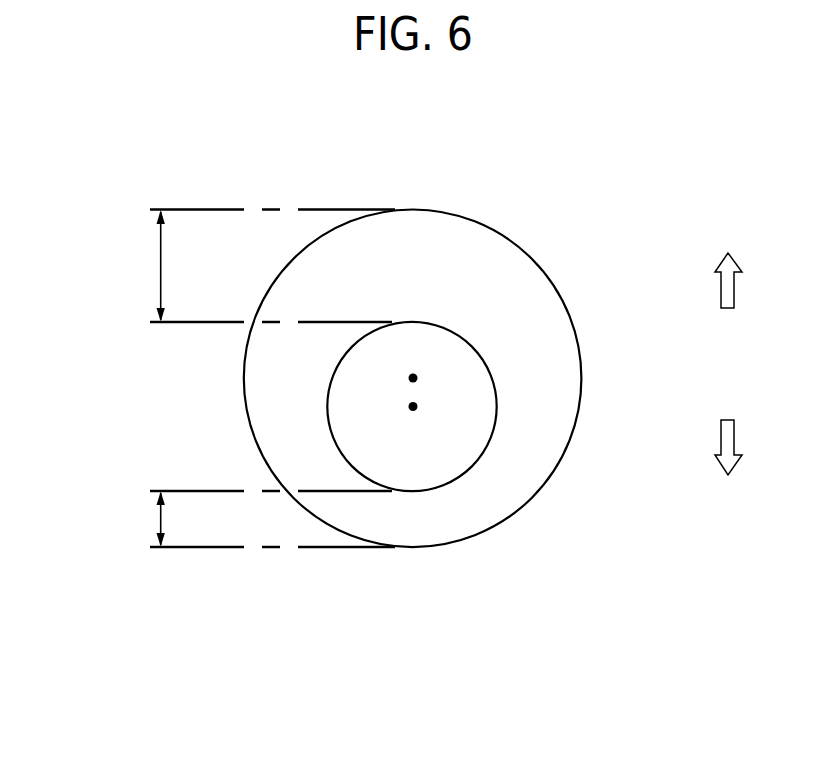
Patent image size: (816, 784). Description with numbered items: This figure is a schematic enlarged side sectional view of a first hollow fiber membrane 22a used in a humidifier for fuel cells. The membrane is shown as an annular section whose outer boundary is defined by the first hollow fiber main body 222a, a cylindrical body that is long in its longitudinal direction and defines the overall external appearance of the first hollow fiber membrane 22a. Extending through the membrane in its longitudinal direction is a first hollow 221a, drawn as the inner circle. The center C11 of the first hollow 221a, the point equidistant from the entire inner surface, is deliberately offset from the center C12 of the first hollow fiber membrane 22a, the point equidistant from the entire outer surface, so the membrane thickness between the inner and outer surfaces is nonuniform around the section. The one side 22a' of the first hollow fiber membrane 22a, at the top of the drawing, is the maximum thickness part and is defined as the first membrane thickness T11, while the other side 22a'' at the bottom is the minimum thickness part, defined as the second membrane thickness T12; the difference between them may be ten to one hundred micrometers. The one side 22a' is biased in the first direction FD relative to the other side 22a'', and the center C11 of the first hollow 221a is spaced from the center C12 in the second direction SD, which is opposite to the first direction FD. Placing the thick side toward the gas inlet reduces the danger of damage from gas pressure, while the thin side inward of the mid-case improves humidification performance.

The first hollow fiber membrane 22a is at (400, 367).
The one side of the first hollow fiber membrane 22a' is at (320, 242).
The other side of the first hollow fiber membrane 22a'' is at (321, 549).
The first hollow fiber main body 222a is at (211, 405).
The first hollow 221a is at (446, 442).
The center of the first hollow C11 is at (417, 406).
The center of the first hollow fiber membrane C12 is at (417, 377).
The first membrane thickness T11 is at (140, 266).
The second membrane thickness T12 is at (140, 519).
The first direction FD is at (727, 266).
The second direction SD is at (727, 463).